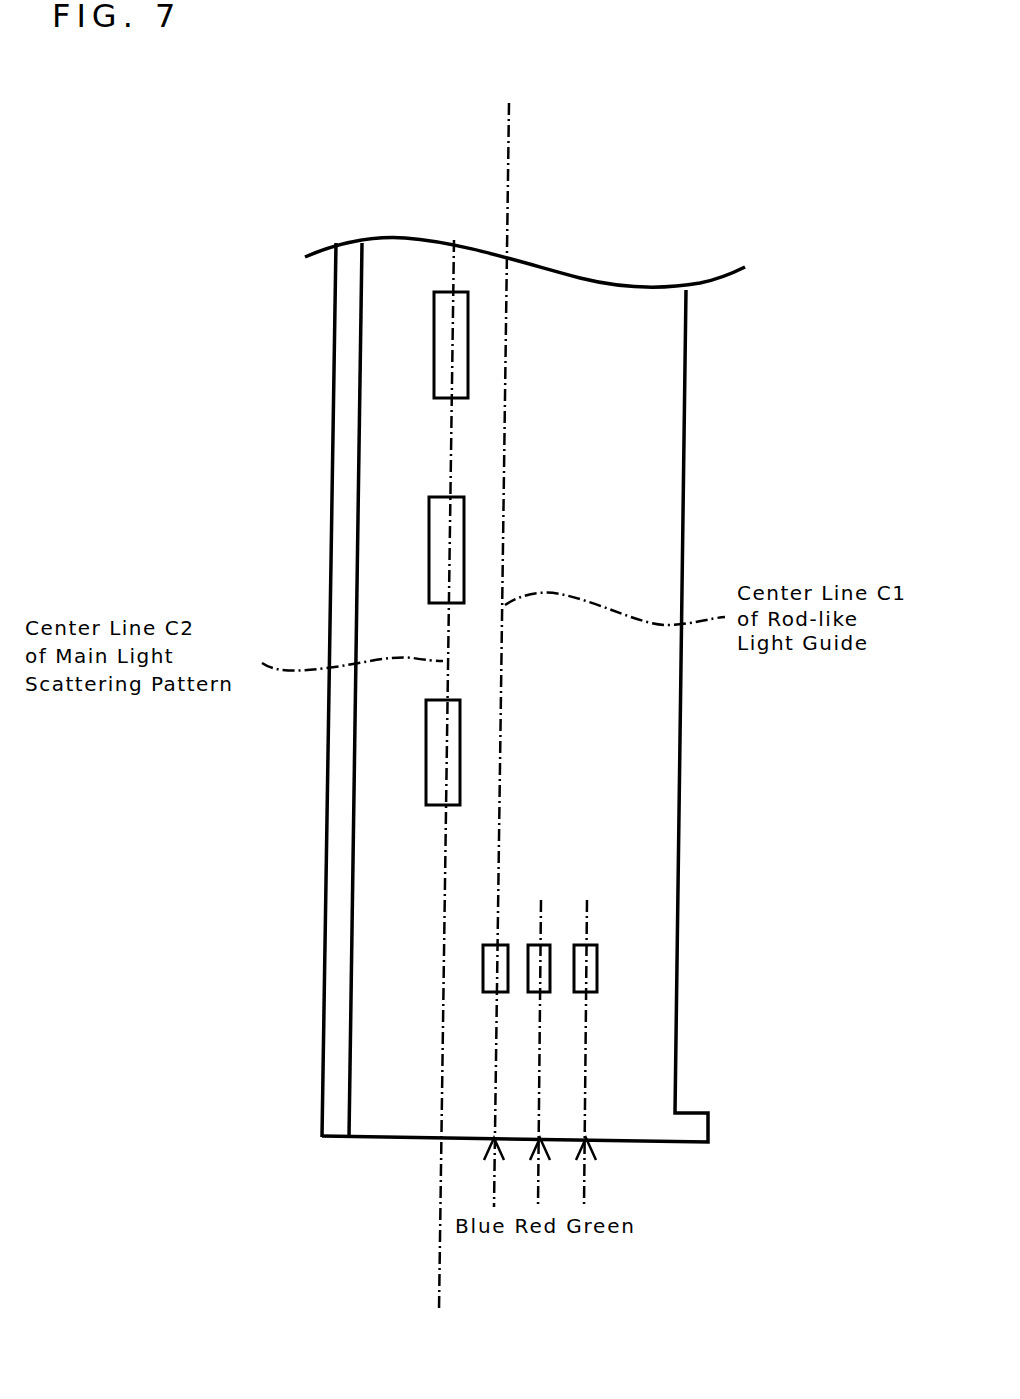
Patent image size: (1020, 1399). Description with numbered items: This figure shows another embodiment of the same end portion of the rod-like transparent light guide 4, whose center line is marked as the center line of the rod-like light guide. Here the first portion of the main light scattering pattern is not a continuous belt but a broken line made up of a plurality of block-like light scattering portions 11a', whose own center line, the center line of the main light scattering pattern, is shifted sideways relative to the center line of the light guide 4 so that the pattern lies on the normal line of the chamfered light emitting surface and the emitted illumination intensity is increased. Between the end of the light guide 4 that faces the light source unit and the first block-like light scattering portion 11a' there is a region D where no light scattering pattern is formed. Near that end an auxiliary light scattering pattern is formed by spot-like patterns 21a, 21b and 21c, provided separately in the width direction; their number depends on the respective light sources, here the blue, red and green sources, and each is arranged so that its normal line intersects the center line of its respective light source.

The rod-like transparent light guide 4 is at (603, 405).
The block-like light scattering portion 11a' is at (330, 548).
The spot-like pattern 21a is at (498, 945).
The spot-like pattern 21b is at (597, 955).
The spot-like pattern 21c is at (547, 945).
The region where no light scattering pattern is formed D is at (405, 943).